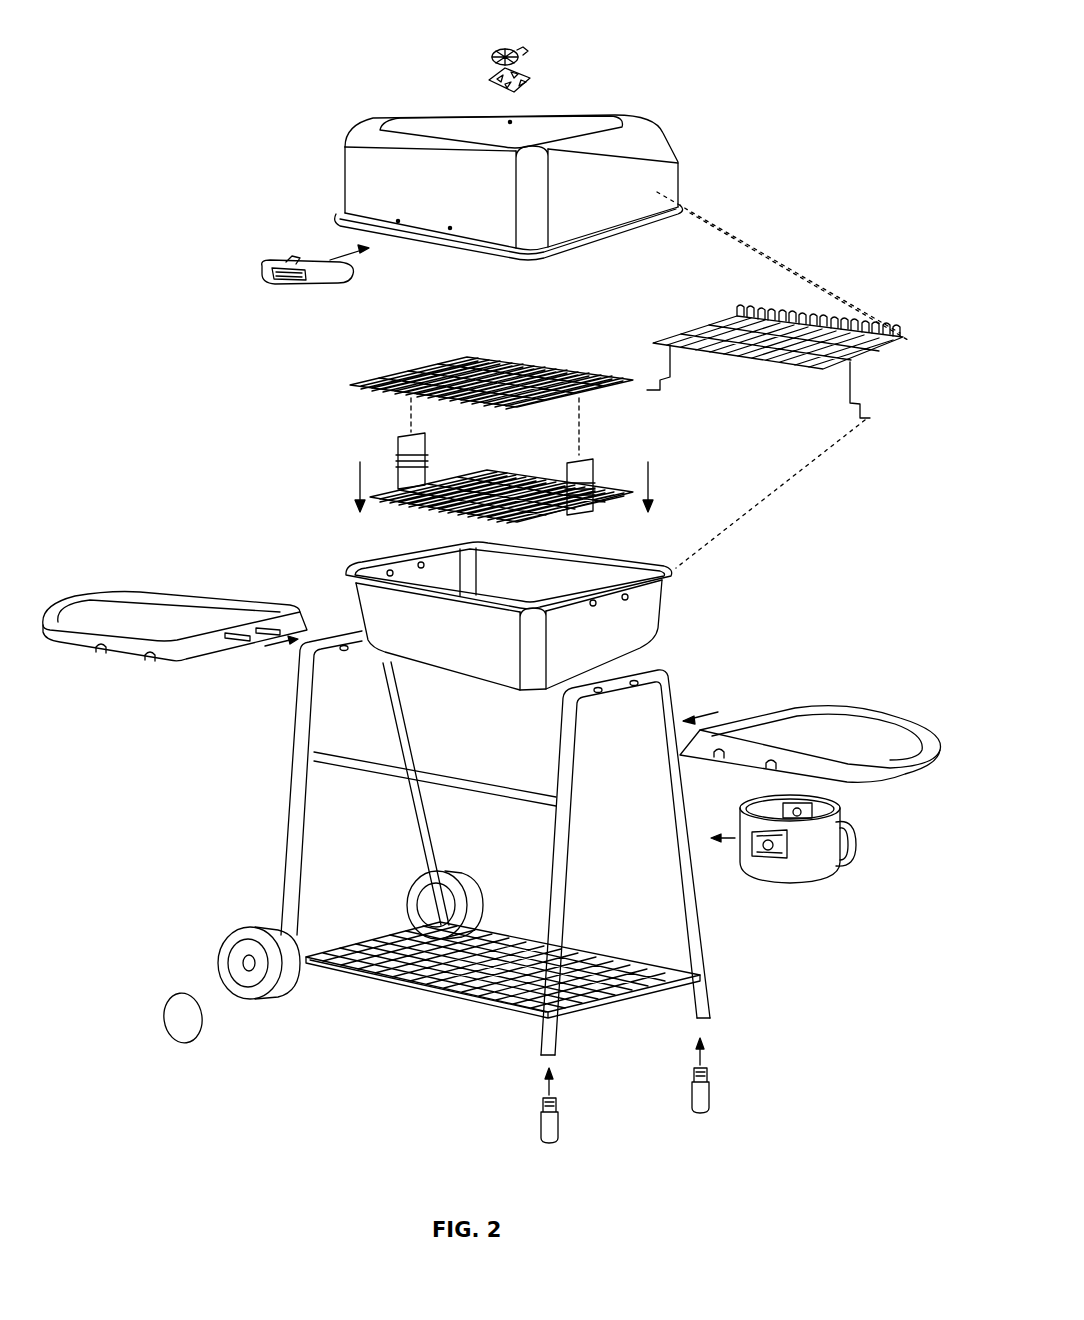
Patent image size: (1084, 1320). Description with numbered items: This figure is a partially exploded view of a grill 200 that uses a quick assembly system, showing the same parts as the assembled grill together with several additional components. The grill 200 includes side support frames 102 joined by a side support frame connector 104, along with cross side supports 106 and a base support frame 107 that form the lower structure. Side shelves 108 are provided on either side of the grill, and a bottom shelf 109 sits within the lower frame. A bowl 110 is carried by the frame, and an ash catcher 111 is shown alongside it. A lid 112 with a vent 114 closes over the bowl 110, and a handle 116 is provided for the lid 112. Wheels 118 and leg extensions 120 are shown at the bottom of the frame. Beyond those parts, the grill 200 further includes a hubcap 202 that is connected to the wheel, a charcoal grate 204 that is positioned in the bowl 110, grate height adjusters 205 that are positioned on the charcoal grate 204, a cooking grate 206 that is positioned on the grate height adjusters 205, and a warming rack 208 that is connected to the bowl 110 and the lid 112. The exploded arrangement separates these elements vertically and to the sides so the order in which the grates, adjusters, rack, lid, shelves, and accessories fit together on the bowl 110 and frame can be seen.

The grill 200 is at (253, 36).
The side support frames 102 is at (672, 682).
The side support frame connector 104 is at (478, 779).
The cross side supports 106 is at (503, 992).
The base support frame 107 is at (487, 1007).
The side shelves 108 is at (138, 597).
The bottom shelf 109 is at (400, 983).
The bowl 110 is at (666, 622).
The ash catcher 111 is at (855, 840).
The lid 112 is at (683, 185).
The vent 114 is at (497, 56).
The handle 116 is at (286, 262).
The wheels 118 is at (263, 922).
The leg extensions 120 is at (560, 1126).
The hubcap 202 is at (181, 994).
The charcoal grate 204 is at (556, 521).
The grate height adjusters 205 is at (398, 455).
The cooking grate 206 is at (350, 385).
The warming rack 208 is at (690, 343).